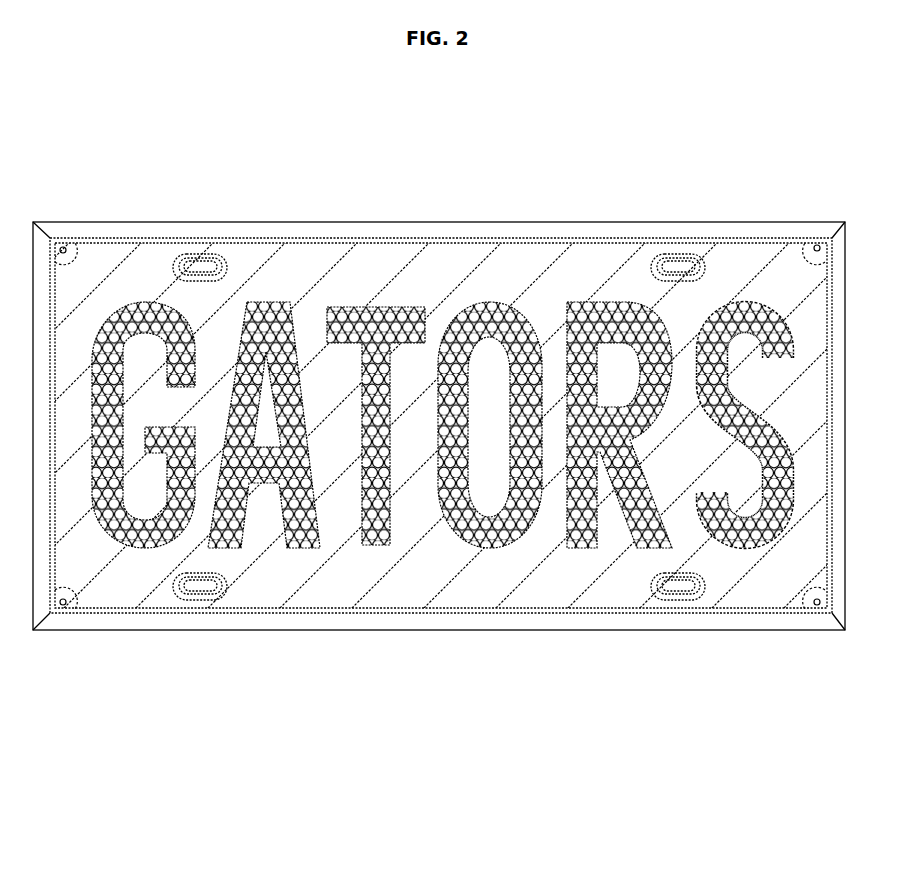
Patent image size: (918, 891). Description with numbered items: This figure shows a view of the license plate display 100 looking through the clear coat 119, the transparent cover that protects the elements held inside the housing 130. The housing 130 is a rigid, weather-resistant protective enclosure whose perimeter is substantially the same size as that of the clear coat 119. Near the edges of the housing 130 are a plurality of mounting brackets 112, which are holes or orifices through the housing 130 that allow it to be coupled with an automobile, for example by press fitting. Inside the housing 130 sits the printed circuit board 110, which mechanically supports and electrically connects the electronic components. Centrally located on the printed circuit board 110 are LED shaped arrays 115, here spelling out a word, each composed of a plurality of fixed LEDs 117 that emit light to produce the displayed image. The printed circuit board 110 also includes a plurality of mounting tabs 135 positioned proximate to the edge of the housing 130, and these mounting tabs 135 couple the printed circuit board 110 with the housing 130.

The license plate display 100 is at (297, 222).
The printed circuit board 110 is at (563, 583).
The mounting brackets 112 is at (200, 262).
The LED shaped arrays 115 is at (372, 543).
The fixed LEDs 117 is at (497, 546).
The clear coat 119 is at (332, 585).
The housing 130 is at (447, 230).
The mounting tabs 135 is at (67, 247).